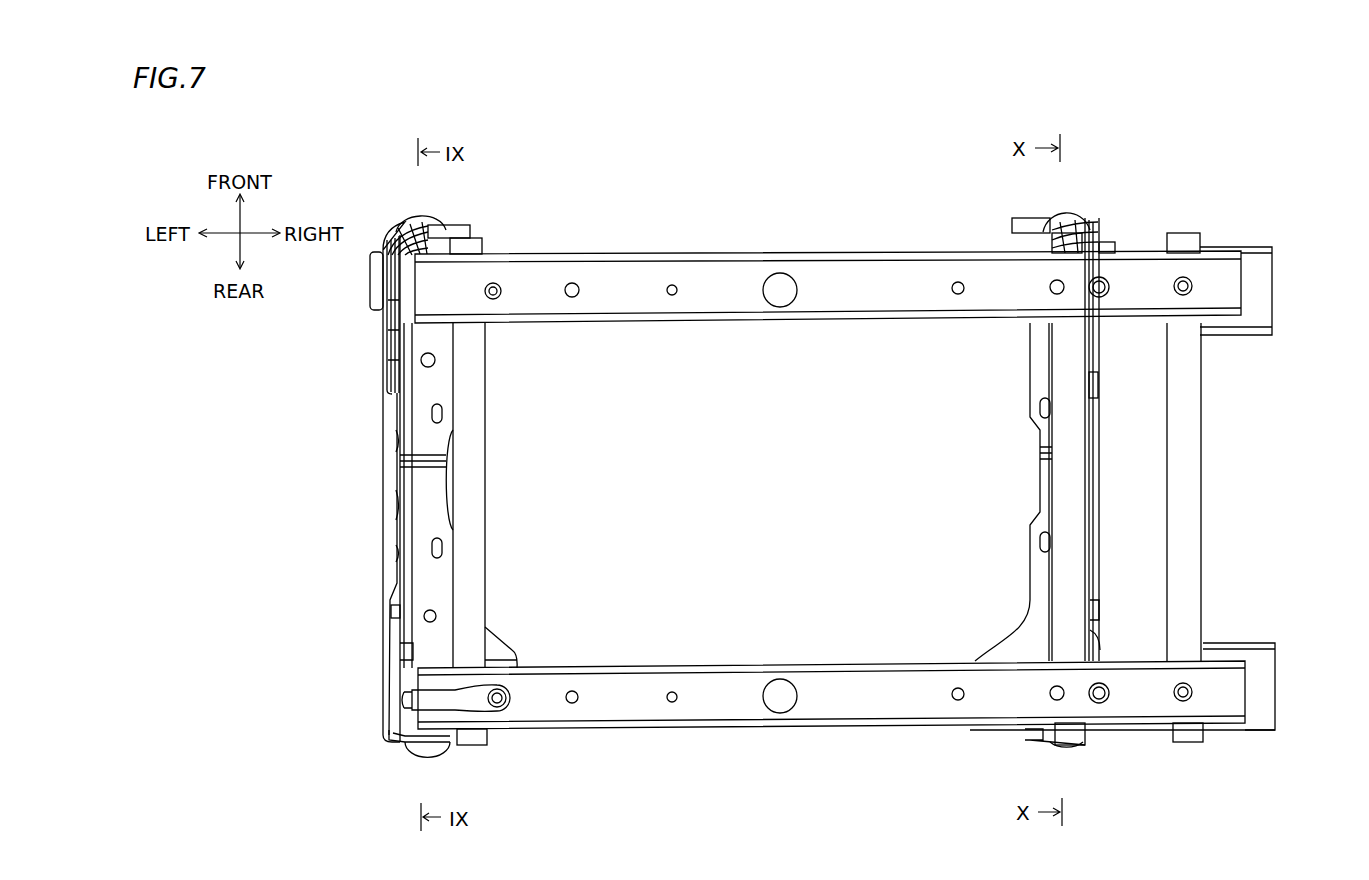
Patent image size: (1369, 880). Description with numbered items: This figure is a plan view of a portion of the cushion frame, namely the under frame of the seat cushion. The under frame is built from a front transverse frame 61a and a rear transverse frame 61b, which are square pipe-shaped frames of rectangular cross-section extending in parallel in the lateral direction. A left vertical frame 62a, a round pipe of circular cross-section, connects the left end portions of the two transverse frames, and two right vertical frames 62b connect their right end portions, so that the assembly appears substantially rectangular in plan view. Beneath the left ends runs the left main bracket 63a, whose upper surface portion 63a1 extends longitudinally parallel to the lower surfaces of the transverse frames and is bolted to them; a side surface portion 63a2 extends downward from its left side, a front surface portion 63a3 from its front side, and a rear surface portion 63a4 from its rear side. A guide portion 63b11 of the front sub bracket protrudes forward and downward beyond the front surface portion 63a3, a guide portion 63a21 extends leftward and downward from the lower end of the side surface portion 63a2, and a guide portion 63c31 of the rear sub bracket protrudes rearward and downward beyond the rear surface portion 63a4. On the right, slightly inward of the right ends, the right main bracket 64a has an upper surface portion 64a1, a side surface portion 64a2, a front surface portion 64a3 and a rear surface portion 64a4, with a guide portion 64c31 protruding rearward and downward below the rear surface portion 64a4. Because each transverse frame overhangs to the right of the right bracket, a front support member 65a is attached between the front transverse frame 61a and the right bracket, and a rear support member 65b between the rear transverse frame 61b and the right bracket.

The front transverse frame 61a is at (745, 252).
The rear transverse frame 61b is at (745, 730).
The left vertical frame 62a is at (475, 520).
The right vertical frames 62b is at (1190, 525).
The left main bracket 63a is at (390, 528).
The upper surface portion 63a1 is at (440, 390).
The side surface portion 63a2 is at (388, 417).
The guide portion 63a21 is at (368, 283).
The front surface portion 63a3 is at (458, 224).
The rear surface portion 63a4 is at (393, 738).
The guide portion 63b11 is at (420, 218).
The guide portion 63c31 is at (428, 750).
The right main bracket 64a is at (1092, 527).
The upper surface portion 64a1 is at (1037, 383).
The side surface portion 64a2 is at (1092, 410).
The front surface portion 64a3 is at (1015, 222).
The rear surface portion 64a4 is at (1038, 740).
The guide portion 64c31 is at (1063, 750).
The front support member 65a is at (1275, 285).
The rear support member 65b is at (1275, 680).